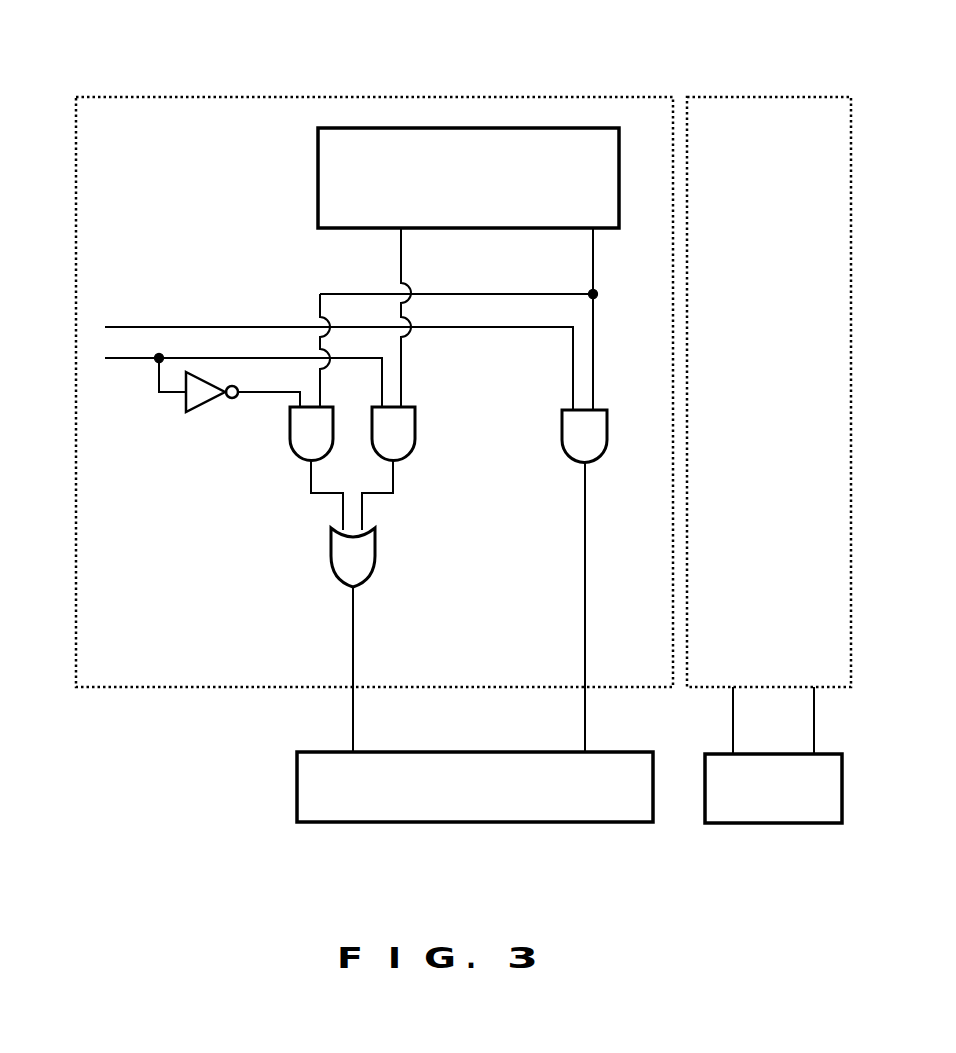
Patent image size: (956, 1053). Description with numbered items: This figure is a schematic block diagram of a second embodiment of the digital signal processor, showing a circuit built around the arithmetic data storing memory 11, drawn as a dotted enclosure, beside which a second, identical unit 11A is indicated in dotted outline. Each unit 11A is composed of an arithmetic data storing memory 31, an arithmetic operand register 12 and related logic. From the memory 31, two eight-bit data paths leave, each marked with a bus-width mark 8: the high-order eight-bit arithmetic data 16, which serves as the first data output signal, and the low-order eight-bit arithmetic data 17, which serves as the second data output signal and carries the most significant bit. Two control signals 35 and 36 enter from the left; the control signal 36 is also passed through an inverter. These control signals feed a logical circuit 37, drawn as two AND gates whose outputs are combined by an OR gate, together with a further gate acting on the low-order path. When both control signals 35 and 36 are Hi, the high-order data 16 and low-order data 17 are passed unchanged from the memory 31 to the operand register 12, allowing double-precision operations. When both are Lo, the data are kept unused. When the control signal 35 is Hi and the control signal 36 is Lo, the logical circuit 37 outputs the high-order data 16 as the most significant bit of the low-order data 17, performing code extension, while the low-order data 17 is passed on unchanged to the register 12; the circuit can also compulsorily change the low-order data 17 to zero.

The arithmetic data storing memory 11 is at (298, 92).
The unit 11A is at (438, 106).
The arithmetic data storing memory 31 is at (318, 165).
The high-order eight-bit arithmetic data 16 is at (401, 268).
The low-order eight-bit arithmetic data 17 is at (597, 265).
The eight-bit width 8 is at (392, 258).
The control signal 35 is at (120, 327).
The control signal 36 is at (124, 362).
The logical circuit 37 is at (277, 408).
The arithmetic operand register 12 is at (506, 799).